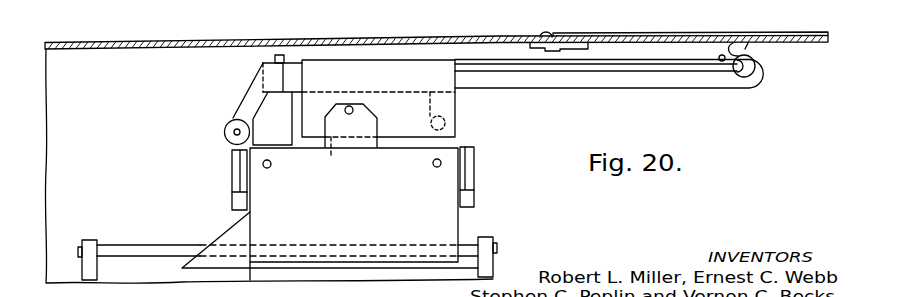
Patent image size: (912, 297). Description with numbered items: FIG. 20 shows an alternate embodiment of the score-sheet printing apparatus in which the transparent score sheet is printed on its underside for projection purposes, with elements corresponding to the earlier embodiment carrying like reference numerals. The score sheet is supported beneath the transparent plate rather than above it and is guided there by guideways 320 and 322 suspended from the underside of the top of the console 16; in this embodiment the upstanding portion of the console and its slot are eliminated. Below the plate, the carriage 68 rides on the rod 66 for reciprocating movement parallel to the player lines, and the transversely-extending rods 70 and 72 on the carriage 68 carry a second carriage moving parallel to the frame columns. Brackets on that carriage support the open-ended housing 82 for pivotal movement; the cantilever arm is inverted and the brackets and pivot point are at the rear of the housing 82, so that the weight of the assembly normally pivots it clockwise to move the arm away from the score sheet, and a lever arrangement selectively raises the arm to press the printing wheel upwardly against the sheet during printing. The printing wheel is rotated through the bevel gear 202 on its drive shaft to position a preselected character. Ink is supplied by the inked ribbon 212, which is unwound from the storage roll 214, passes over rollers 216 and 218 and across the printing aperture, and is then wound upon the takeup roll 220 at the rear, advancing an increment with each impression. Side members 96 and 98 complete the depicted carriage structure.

The console 16 is at (135, 42).
The guideway 320 is at (533, 33).
The guideway 322 is at (582, 42).
The open-ended housing 82 is at (365, 60).
The roller 216 is at (438, 92).
The storage roll 214 is at (446, 118).
The roller 218 is at (677, 68).
The bevel gear 202 is at (756, 62).
The inked ribbon 212 is at (250, 87).
The takeup roll 220 is at (224, 132).
The left guide bracket 98 is at (240, 173).
The right guide bracket 96 is at (474, 172).
The first carriage 68 is at (367, 213).
The transversely-extending rod 70 is at (270, 167).
The transversely-extending rod 72 is at (433, 166).
The rod 66 is at (157, 247).